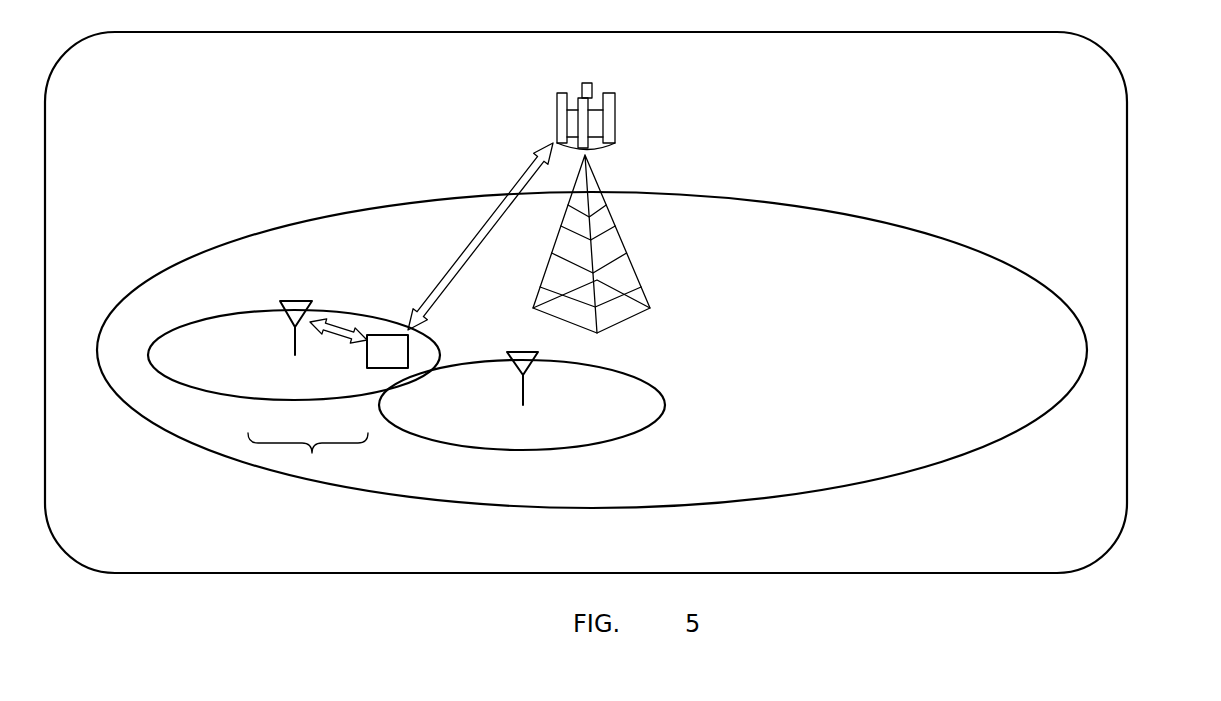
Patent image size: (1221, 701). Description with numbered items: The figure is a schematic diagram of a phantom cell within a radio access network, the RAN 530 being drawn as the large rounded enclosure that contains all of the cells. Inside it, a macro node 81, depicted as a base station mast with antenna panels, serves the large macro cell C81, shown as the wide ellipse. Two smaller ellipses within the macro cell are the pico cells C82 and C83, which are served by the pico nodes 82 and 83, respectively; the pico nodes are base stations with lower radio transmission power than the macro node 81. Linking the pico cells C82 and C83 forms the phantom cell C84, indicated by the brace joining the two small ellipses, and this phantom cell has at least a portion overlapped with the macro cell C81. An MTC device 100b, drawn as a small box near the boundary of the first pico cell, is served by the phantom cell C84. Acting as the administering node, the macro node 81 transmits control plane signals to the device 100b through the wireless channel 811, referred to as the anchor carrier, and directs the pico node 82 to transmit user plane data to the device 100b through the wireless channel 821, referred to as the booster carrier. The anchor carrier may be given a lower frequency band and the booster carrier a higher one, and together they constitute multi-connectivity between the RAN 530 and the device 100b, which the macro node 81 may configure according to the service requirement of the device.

The RAN 530 is at (1107, 55).
The macro node 81 is at (618, 94).
The macro cell C81 is at (703, 192).
The wireless channel 811 is at (468, 250).
The pico node 82 is at (310, 303).
The wireless channel 821 is at (347, 323).
The MTC device 100b is at (408, 338).
The pico node 83 is at (540, 352).
The pico cell C82 is at (208, 392).
The pico cell C83 is at (383, 400).
The phantom cell C84 is at (308, 458).